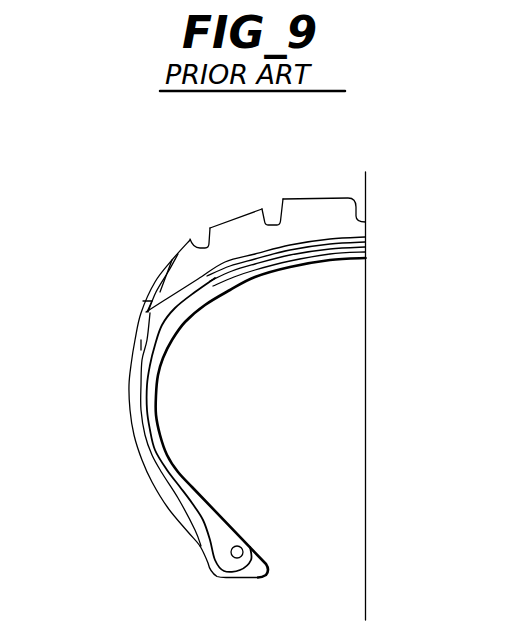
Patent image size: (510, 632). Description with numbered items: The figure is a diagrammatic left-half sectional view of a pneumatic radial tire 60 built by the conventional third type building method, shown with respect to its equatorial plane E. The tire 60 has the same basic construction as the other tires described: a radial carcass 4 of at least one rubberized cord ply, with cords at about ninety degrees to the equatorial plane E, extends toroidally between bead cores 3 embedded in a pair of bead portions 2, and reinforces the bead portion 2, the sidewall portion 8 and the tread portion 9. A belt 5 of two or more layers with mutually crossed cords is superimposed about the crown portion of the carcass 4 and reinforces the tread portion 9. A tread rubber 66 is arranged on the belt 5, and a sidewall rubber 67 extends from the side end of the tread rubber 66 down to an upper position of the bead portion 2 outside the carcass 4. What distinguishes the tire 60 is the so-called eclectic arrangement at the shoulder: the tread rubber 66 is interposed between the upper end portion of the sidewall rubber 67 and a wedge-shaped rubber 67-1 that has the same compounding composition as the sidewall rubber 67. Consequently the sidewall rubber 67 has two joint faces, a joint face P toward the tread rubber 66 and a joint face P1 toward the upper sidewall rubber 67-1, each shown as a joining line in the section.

The bead portion 2 is at (192, 548).
The bead core 3 is at (233, 557).
The radial carcass 4 is at (145, 345).
The belt 5 is at (255, 248).
The sidewall portion 8 is at (118, 386).
The tread portion 9 is at (279, 190).
The pneumatic radial tire 60 is at (193, 221).
The tread rubber 66 is at (318, 200).
The sidewall rubber 67 is at (140, 445).
The upper sidewall rubber 67-1 is at (157, 270).
The equatorial plane E is at (367, 175).
The joint face P is at (150, 293).
The joint face P1 is at (163, 268).